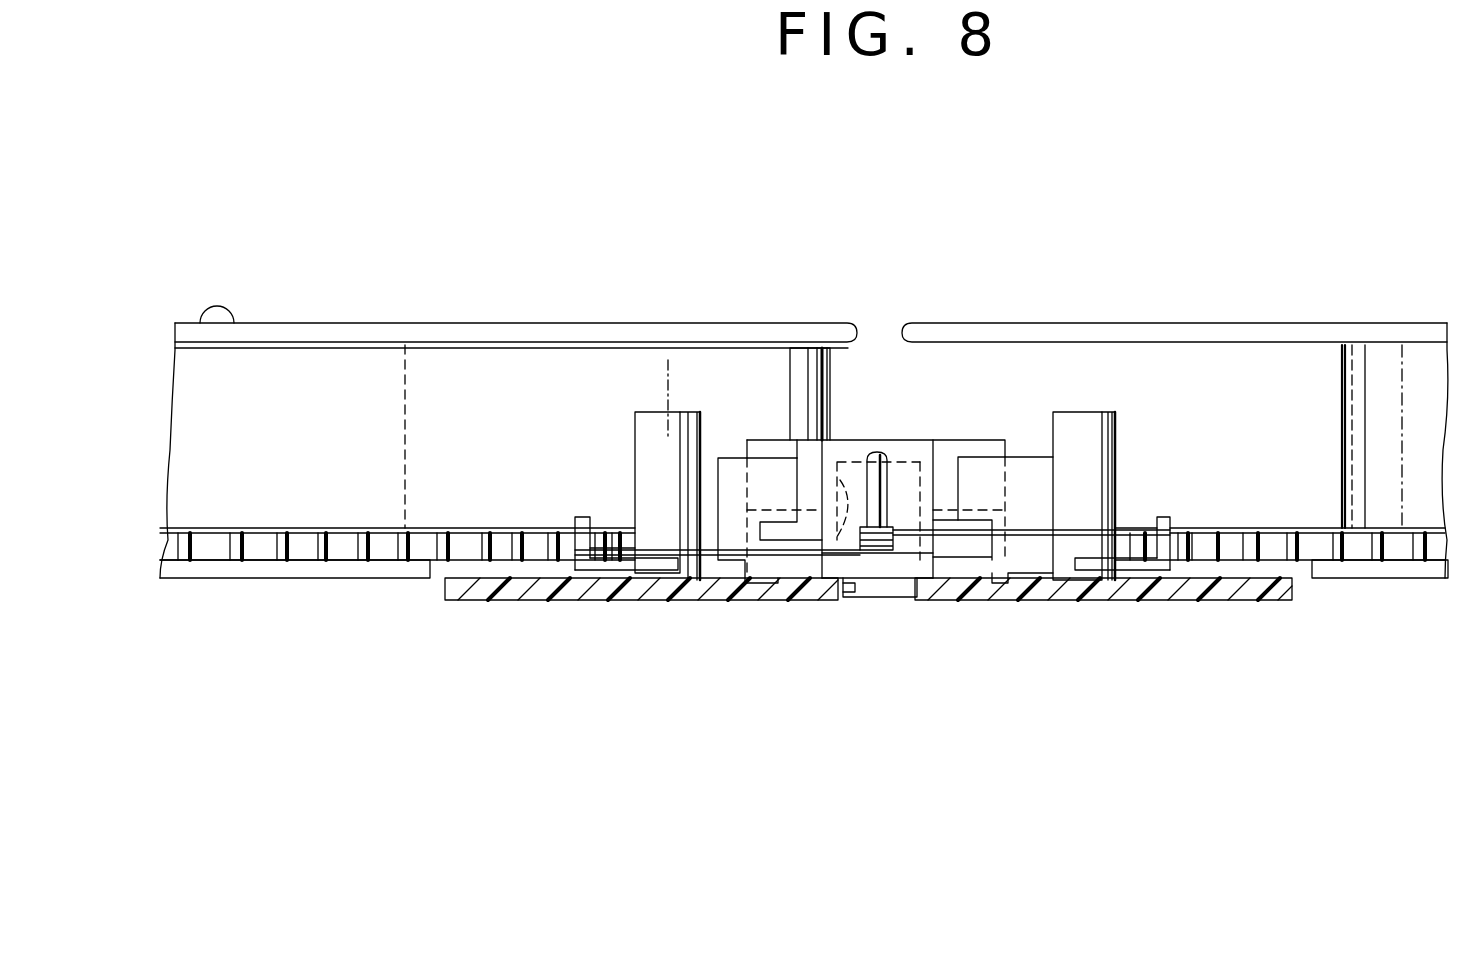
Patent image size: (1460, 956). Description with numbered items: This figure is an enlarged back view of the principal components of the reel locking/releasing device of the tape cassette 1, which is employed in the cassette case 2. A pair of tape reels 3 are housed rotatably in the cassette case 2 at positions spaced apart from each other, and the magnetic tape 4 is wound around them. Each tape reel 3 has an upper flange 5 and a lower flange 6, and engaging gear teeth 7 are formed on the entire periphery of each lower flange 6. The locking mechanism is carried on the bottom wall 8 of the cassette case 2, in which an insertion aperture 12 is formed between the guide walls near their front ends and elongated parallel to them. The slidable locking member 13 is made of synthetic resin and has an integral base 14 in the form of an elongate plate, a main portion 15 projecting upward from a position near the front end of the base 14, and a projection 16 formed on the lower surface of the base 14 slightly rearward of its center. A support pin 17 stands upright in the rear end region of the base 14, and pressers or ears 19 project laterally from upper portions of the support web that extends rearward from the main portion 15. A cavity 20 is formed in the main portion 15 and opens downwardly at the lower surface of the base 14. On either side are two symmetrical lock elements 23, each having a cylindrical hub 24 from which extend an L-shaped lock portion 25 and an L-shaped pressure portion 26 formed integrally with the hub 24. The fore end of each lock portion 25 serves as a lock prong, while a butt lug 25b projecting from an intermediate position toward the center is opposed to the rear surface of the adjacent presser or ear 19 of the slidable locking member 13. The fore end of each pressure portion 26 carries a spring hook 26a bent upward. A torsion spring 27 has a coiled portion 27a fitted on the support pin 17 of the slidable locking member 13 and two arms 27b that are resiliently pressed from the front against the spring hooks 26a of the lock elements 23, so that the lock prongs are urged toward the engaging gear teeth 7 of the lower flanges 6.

The tape cassette 1 is at (1125, 175).
The cassette case 2 is at (1235, 600).
The tape reel 3 is at (470, 322).
The magnetic tape 4 is at (780, 352).
The upper flange 5 is at (583, 322).
The lower flange 6 is at (265, 548).
The engaging gear teeth 7 is at (385, 548).
The bottom wall 8 is at (562, 592).
The insertion aperture 12 is at (850, 592).
The slidable locking member 13 is at (923, 438).
The base 14 is at (900, 575).
The main portion 15 is at (850, 440).
The projection 16 is at (872, 592).
The support pin 17 is at (878, 455).
The presser or ear 19 is at (768, 440).
The cavity 20 is at (820, 548).
The lock element 23 is at (636, 432).
The cylindrical hub 24 is at (678, 420).
The lock portion 25 is at (720, 458).
The butt lug 25b is at (800, 462).
The pressure portion 26 is at (620, 562).
The spring hook 26a is at (577, 517).
The torsion spring 27 is at (910, 528).
The coiled portion 27a is at (880, 552).
The arm 27b is at (668, 553).